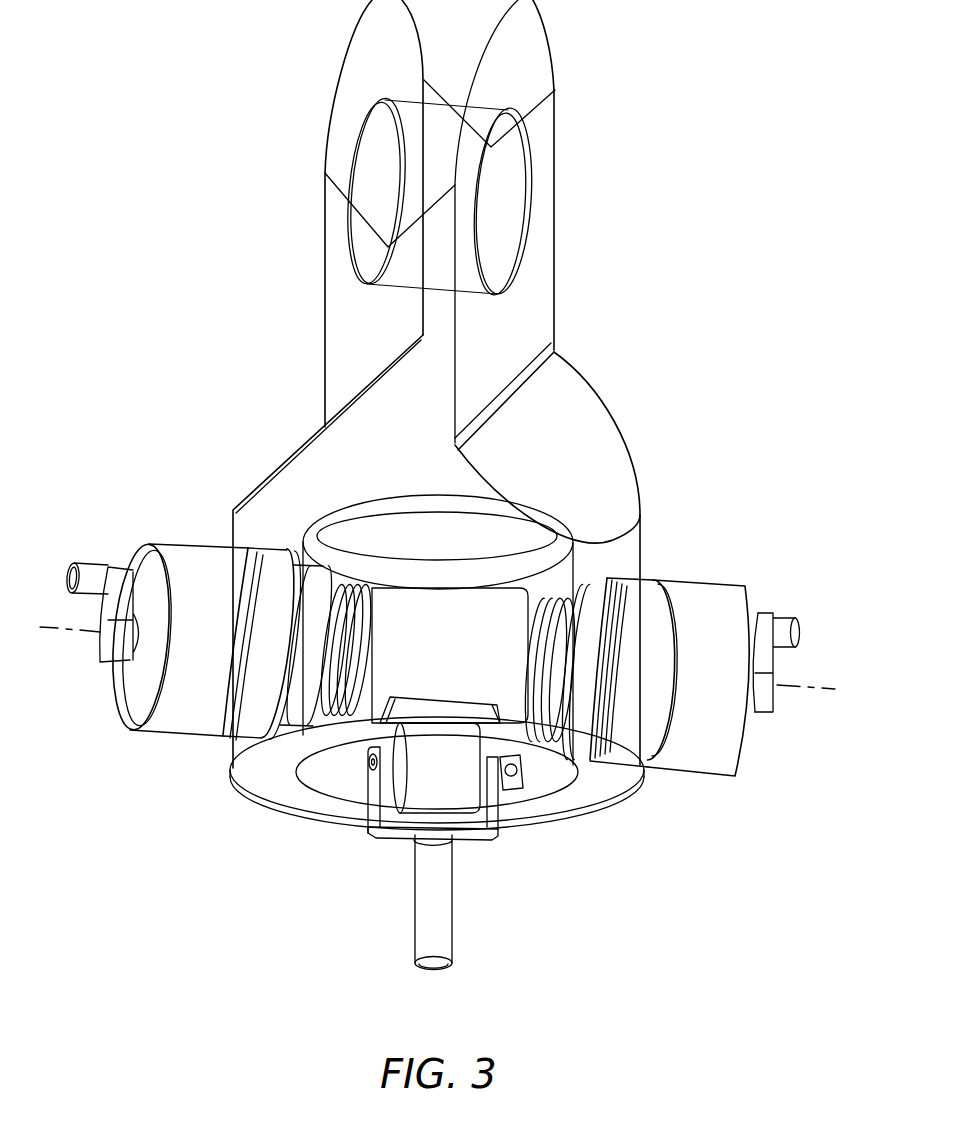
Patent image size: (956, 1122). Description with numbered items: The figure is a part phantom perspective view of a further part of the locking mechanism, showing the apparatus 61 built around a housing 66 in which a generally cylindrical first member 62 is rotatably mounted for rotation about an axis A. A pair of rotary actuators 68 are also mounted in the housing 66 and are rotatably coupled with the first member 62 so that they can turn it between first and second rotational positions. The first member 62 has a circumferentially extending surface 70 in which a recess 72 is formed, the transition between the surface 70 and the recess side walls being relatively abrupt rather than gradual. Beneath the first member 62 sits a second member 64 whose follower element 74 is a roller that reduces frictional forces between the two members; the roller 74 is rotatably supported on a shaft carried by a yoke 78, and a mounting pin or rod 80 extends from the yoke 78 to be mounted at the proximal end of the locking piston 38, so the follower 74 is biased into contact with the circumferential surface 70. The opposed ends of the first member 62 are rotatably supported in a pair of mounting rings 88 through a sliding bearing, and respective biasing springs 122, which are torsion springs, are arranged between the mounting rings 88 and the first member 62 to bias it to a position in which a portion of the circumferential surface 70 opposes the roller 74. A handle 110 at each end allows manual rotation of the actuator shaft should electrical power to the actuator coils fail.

The locking piston 38 is at (433, 982).
The yoke assembly 61 is at (262, 861).
The first member 62 is at (513, 720).
The second member 64 is at (497, 830).
The housing 66 is at (598, 414).
The rotary actuators 68 is at (168, 727).
The circumferentially extending surface 70 is at (446, 597).
The recess 72 is at (442, 715).
The follower element 74 is at (418, 790).
The yoke 78 is at (475, 843).
The mounting pin or rod 80 is at (445, 925).
The mounting rings 88 is at (257, 562).
The handle 110 is at (90, 572).
The biasing springs 122 is at (347, 638).
The axis A is at (810, 692).